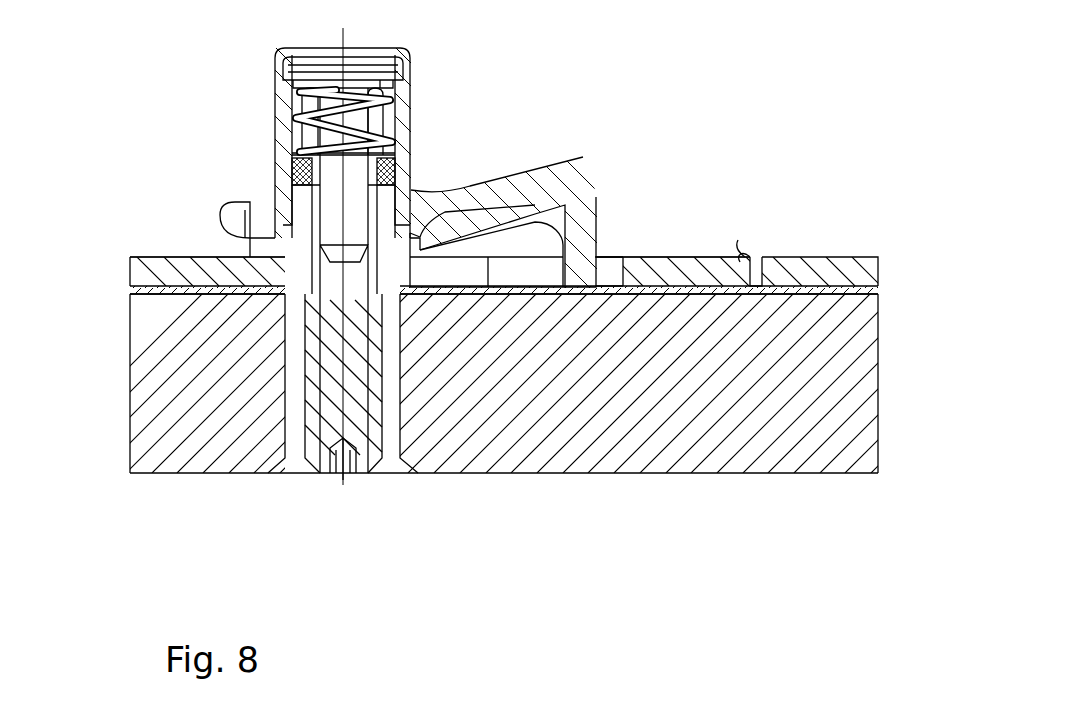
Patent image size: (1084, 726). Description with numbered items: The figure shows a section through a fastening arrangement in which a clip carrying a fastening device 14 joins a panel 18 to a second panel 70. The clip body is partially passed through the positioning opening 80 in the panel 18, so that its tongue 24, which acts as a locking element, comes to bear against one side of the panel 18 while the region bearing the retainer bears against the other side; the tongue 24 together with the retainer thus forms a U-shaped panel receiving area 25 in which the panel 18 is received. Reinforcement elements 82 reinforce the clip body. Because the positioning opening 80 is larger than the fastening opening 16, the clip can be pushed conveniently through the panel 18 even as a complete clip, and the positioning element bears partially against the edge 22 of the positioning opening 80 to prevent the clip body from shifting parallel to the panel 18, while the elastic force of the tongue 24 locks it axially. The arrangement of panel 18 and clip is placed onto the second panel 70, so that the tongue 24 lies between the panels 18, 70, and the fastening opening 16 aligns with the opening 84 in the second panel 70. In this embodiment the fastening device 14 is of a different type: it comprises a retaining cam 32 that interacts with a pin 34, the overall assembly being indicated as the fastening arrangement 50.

The fastening device 14 is at (280, 113).
The fastening opening 16 is at (290, 270).
The panel 18 is at (853, 267).
The edge 22 is at (757, 260).
The tongue 24 is at (260, 292).
The panel receiving area 25 is at (533, 240).
The retaining cam 32 is at (405, 125).
The pin 34 is at (307, 462).
The mounting assembly 50 is at (833, 115).
The second panel 70 is at (862, 357).
The positioning opening 80 is at (618, 275).
The reinforcement elements 82 is at (596, 165).
The opening 84 is at (388, 382).